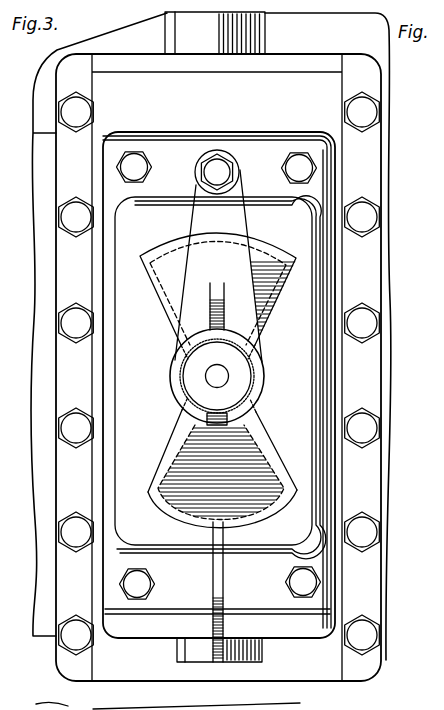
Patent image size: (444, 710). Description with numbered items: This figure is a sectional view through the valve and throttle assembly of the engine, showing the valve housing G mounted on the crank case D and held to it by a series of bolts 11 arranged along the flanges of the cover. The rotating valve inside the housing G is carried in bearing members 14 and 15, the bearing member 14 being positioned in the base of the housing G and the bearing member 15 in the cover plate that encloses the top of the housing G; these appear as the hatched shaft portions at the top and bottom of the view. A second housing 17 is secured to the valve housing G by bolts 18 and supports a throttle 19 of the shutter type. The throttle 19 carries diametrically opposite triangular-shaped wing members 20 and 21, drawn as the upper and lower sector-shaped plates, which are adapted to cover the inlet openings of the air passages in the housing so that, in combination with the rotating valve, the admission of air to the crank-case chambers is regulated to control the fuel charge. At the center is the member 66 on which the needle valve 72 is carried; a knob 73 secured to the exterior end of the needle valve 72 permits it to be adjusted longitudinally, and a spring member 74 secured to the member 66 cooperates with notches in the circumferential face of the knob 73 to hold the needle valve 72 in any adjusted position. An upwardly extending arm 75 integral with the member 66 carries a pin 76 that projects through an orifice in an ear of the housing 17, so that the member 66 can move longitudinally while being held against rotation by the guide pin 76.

The crank case D is at (372, 664).
The bolts 11 is at (82, 112).
The bearing member 14 is at (255, 38).
The bearing member 15 is at (244, 662).
The housing 17 is at (286, 412).
The bolts 18 is at (134, 165).
The throttle 19 is at (289, 468).
The wing member 20 is at (414, 242).
The wing member 21 is at (292, 508).
The valve housing G is at (338, 293).
The member 66 is at (264, 381).
The needle valve 72 is at (213, 379).
The knob 73 is at (190, 368).
The spring member 74 is at (218, 430).
The arm 75 is at (200, 222).
The pin 76 is at (212, 176).